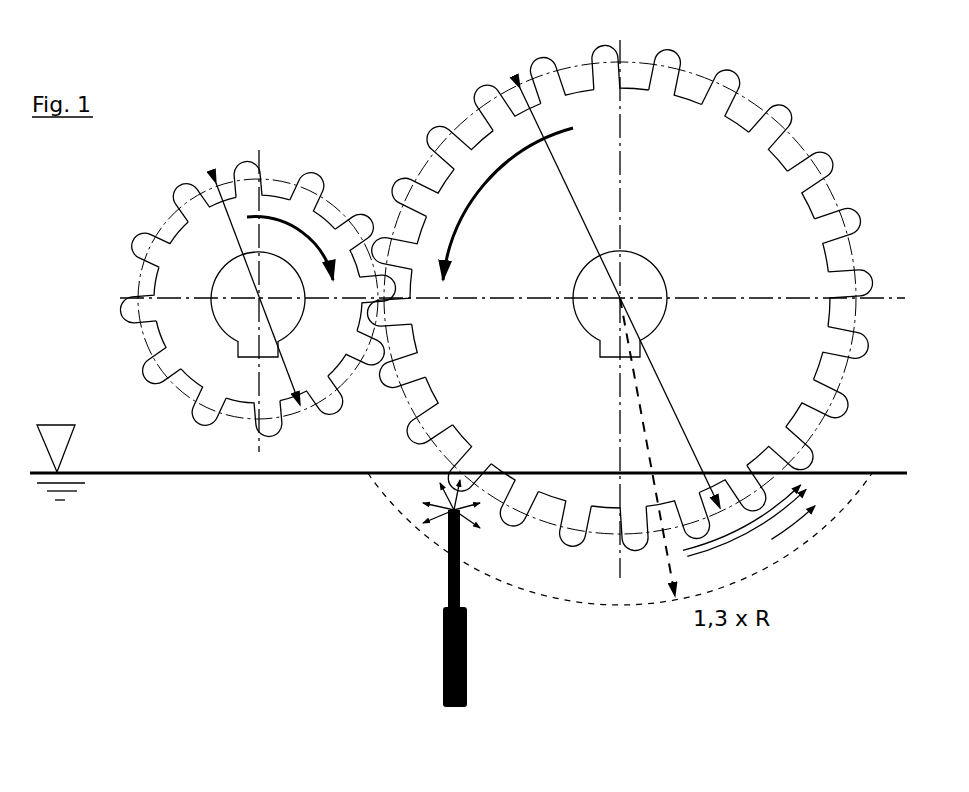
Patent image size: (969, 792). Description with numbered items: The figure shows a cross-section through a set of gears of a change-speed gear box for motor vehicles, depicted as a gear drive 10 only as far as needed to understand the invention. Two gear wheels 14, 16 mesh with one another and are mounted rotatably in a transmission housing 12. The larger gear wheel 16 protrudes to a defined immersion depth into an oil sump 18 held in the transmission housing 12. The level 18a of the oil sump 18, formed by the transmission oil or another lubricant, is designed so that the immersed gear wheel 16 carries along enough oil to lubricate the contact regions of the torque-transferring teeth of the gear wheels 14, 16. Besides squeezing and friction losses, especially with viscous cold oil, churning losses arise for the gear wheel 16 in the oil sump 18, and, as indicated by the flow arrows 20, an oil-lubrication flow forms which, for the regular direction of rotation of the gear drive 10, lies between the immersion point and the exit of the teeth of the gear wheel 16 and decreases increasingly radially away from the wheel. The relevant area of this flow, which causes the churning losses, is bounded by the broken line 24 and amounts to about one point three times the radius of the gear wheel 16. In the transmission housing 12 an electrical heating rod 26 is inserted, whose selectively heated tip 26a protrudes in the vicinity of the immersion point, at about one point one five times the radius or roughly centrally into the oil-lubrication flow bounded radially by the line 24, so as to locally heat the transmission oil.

The gear drive 10 is at (352, 147).
The transmission housing 12 is at (840, 73).
The gear wheel 14 is at (178, 187).
The gear wheel 16 is at (475, 91).
The oil sump 18 is at (468, 475).
The level 18a is at (160, 469).
The flow arrows 20 is at (787, 524).
The broken line 24 is at (543, 604).
The electrical heating rod 26 is at (432, 616).
The heated tip 26a is at (420, 512).